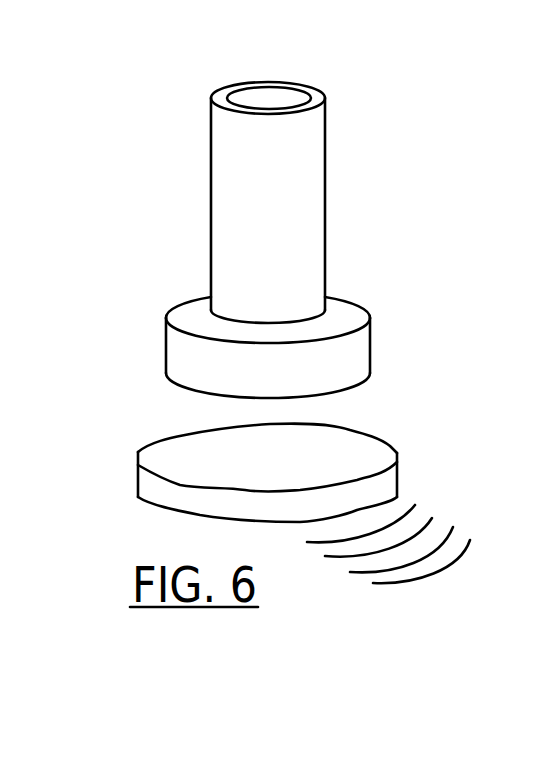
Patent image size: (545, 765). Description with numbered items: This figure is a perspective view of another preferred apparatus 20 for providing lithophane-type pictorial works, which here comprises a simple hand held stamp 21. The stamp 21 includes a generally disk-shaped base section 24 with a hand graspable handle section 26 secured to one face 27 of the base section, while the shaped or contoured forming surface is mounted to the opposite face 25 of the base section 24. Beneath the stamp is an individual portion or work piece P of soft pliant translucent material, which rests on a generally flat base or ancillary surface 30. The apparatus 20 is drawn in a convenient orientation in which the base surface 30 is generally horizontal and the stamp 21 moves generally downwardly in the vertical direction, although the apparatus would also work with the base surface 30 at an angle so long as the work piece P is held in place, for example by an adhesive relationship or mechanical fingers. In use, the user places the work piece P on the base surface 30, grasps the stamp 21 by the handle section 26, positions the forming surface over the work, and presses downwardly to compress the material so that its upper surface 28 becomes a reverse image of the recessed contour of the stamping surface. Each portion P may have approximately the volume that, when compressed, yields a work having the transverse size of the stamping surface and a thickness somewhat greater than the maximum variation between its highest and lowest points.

The apparatus 20 is at (259, 243).
The stamp 21 is at (259, 195).
The base section 24 is at (215, 339).
The opposite face 25 is at (208, 394).
The handle section 26 is at (215, 118).
The face 27 is at (197, 308).
The upper surface 28 is at (170, 477).
The work piece P is at (384, 447).
The base surface 30 is at (427, 523).